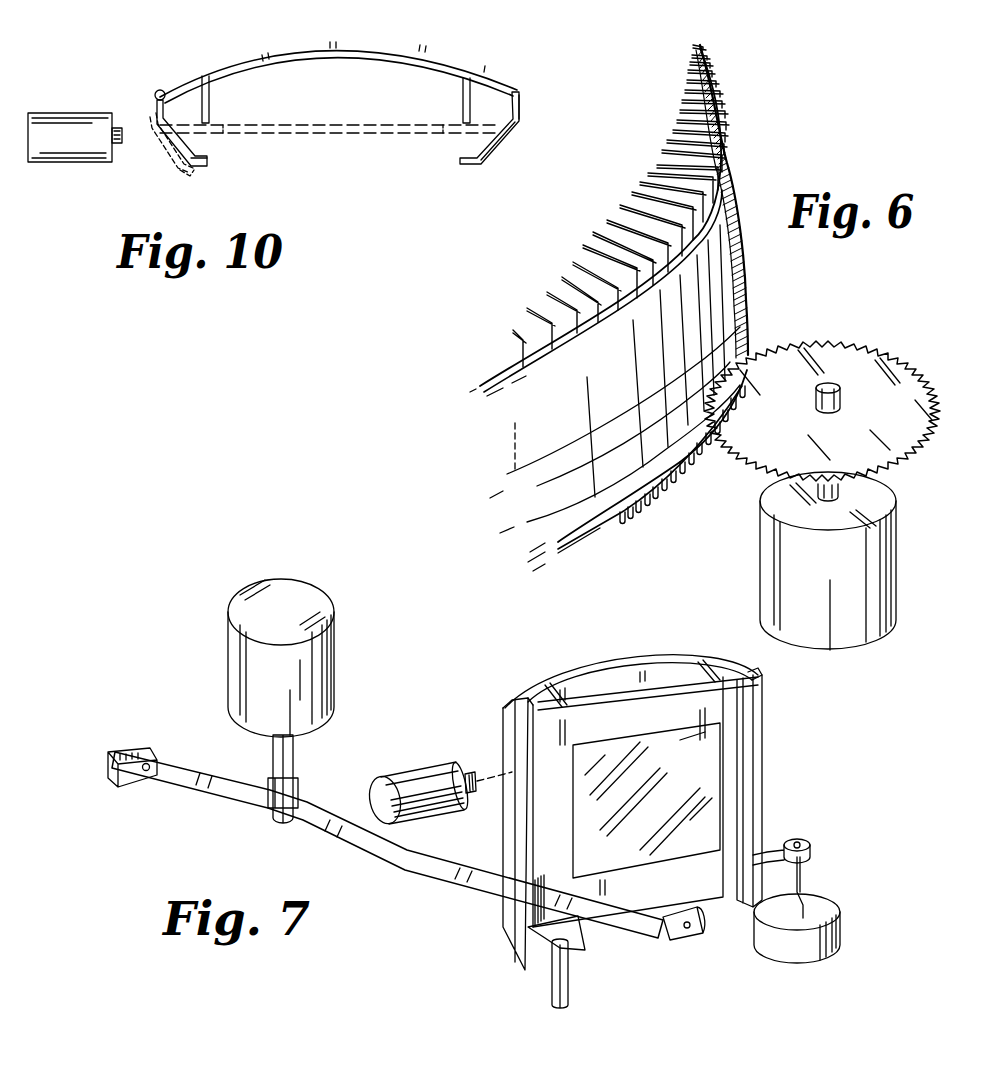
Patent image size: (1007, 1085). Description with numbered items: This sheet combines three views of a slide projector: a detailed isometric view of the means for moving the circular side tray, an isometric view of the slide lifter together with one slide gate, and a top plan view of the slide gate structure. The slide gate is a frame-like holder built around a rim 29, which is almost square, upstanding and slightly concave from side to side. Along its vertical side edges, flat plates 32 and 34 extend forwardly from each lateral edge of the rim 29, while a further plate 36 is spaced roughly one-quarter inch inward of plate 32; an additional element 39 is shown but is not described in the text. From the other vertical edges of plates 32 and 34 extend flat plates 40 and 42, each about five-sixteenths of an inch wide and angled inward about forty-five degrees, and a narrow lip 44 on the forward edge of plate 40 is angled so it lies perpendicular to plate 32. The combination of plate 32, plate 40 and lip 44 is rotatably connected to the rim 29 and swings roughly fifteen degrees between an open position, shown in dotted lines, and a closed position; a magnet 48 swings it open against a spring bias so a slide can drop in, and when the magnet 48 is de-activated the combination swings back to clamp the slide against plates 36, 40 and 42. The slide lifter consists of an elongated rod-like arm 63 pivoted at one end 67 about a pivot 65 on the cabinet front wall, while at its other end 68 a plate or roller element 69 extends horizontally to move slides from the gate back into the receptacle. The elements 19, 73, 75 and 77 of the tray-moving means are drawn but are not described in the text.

In FIG. 6, the finned rotatable ring 19 is at (738, 215).
In FIG. 10, the rim 29 is at (380, 48).
In FIG. 10, the flat plate 32 is at (155, 100).
In FIG. 10, the flat plate 34 is at (520, 112).
In FIG. 10, the flat plate 36 is at (211, 101).
In FIG. 10, the strut 39 is at (461, 99).
In FIG. 10, the flat plate 40 is at (183, 178).
In FIG. 10, the flat plate 42 is at (500, 141).
In FIG. 10, the narrow lip 44 is at (204, 168).
In FIG. 10, the magnet 48 is at (75, 144).
In FIG. 7, the magnet 48 is at (420, 775).
In FIG. 7, the arm 63 is at (202, 783).
In FIG. 7, the pivot 65 is at (130, 750).
In FIG. 7, the end of arm 67 is at (157, 763).
In FIG. 7, the other end of arm 68 is at (683, 938).
In FIG. 7, the plate or roller element 69 is at (707, 921).
In FIG. 7, the motor 73 is at (235, 643).
In FIG. 6, the motor shaft / motor 75 is at (770, 540).
In FIG. 7, the motor shaft / motor 75 is at (297, 773).
In FIG. 6, the gear 77 is at (833, 352).